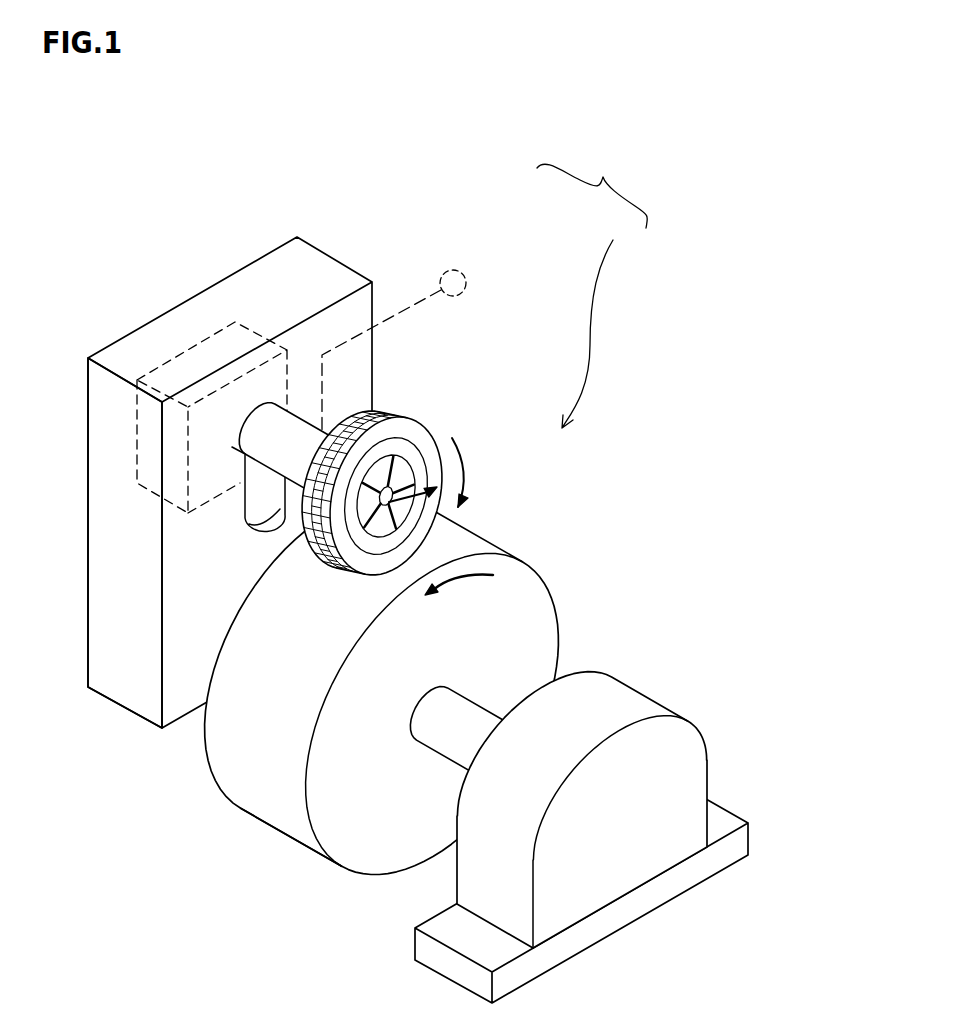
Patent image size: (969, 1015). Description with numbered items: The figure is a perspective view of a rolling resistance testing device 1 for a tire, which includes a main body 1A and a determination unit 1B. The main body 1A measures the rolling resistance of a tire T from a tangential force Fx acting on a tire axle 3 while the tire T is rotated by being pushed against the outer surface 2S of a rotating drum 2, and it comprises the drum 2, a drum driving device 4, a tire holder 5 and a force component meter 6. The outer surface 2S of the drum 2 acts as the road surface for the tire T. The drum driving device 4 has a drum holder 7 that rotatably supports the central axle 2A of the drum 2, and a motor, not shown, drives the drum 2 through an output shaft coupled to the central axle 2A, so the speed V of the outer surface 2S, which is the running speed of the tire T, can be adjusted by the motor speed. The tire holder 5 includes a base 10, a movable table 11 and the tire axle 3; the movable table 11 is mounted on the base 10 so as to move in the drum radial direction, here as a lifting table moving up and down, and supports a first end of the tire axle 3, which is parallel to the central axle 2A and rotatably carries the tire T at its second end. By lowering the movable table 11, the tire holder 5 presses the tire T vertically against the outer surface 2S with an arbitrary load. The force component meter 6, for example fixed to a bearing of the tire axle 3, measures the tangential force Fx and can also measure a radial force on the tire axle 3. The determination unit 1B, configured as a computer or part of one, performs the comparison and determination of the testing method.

The rolling resistance testing device 1 is at (592, 191).
The main body 1A is at (601, 319).
The determination unit 1B is at (458, 270).
The drum 2 is at (291, 864).
The central axle 2A is at (473, 703).
The outer surface 2S is at (240, 748).
The tire axle 3 is at (293, 440).
The drum driving device 4 is at (650, 659).
The tire holder 5 is at (101, 716).
The force component meter 6 is at (335, 432).
The drum holder 7 is at (673, 768).
The base 10 is at (112, 602).
The movable table 11 is at (135, 465).
The tire T is at (415, 406).
The tangential force Fx is at (437, 487).
The speed V is at (467, 577).